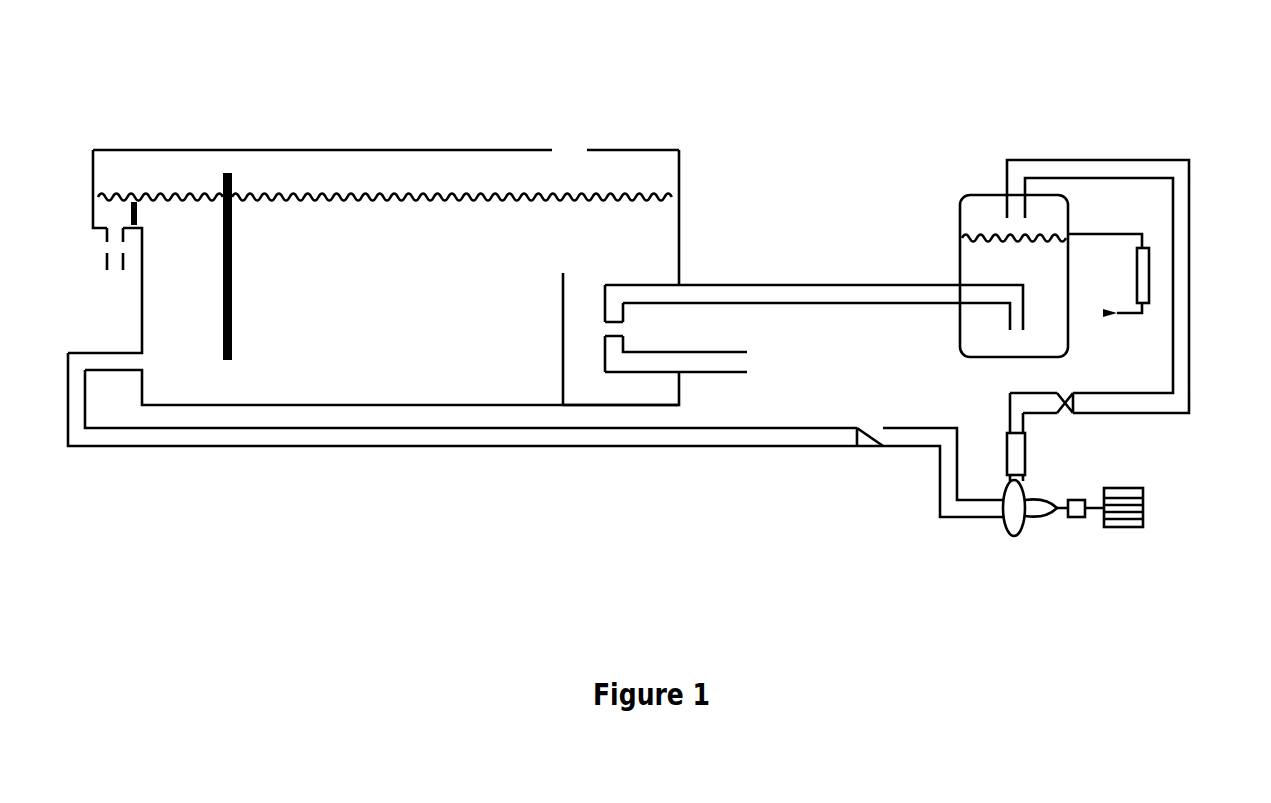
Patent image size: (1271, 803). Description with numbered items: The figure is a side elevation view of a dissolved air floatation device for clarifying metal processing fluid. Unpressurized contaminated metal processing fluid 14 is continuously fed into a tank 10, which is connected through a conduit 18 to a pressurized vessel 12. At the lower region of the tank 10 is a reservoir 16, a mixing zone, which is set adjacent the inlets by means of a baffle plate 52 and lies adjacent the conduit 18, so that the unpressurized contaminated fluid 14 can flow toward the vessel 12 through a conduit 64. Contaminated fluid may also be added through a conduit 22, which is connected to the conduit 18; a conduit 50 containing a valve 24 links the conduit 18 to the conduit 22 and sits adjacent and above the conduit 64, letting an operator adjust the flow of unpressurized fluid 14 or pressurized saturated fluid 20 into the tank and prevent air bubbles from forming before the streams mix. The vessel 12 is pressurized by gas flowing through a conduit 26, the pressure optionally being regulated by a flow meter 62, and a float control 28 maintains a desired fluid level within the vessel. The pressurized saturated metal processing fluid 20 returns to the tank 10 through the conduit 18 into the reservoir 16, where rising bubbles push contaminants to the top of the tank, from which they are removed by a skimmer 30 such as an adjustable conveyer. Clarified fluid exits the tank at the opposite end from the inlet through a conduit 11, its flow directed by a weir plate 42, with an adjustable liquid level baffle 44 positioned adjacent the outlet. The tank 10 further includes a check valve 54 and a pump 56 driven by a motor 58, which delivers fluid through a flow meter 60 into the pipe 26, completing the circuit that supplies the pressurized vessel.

The tank 10 is at (373, 277).
The conduit 11 is at (115, 275).
The vessel 12 is at (519, 288).
The unpressurized contaminated metal processing fluid 14 is at (695, 197).
The reservoir 16 is at (621, 393).
The conduit 18 is at (814, 310).
The pressurized saturated metal processing fluid 20 is at (945, 238).
The conduit 22 is at (816, 353).
The valve 24 is at (639, 331).
The conduit 26 is at (1098, 282).
The float control 28 is at (1216, 255).
The skimmer 30 is at (437, 185).
The weir plate 42 is at (248, 266).
The baffle 44 is at (158, 213).
The conduit 50 is at (592, 332).
The baffle plate 52 is at (550, 356).
The check valve 54 is at (871, 456).
The pump 56 is at (1035, 537).
The motor 58 is at (1121, 507).
The flow meter 60 is at (1034, 457).
The flow meter 62 is at (1108, 281).
The conduit 64 is at (592, 370).